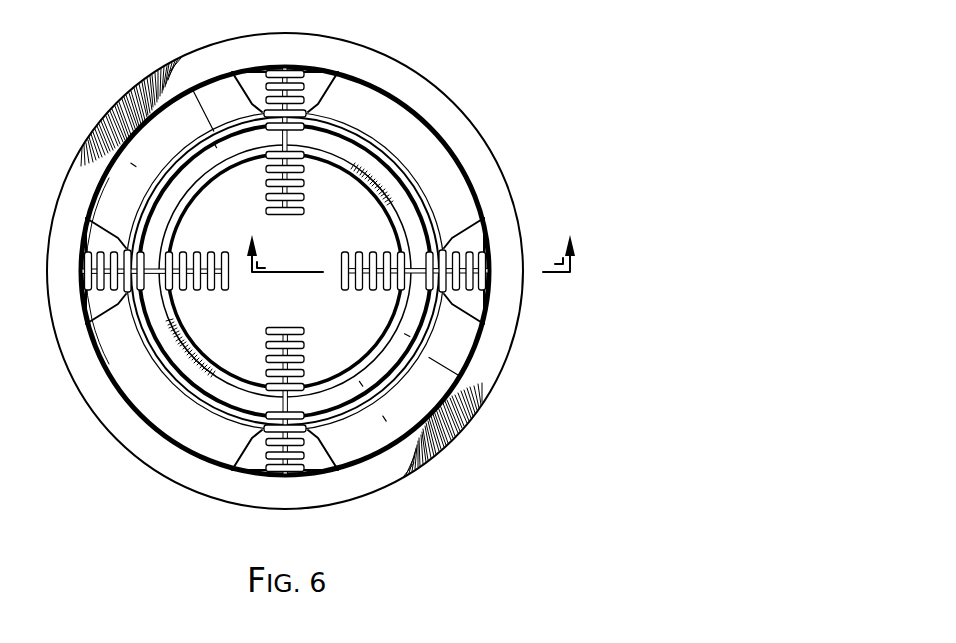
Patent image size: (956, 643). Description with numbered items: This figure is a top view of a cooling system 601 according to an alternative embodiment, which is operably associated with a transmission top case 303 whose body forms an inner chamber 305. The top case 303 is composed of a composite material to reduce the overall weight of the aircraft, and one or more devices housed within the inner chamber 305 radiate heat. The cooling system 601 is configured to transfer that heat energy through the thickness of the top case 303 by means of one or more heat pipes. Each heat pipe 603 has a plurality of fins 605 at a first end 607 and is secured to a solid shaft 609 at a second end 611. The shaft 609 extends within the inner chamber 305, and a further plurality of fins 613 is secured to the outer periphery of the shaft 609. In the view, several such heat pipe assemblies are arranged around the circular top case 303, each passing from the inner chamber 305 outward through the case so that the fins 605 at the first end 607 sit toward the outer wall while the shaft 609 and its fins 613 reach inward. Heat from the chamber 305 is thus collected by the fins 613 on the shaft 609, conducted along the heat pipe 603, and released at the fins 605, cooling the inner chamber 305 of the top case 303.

The cooling system 601 is at (548, 86).
The transmission top case 303 is at (445, 454).
The inner chamber 305 is at (212, 338).
The heat pipe 603 is at (437, 245).
The fins 605 is at (490, 278).
The first end 607 is at (492, 320).
The solid shaft 609 is at (362, 257).
The second end 611 is at (396, 302).
The fins 613 is at (352, 285).